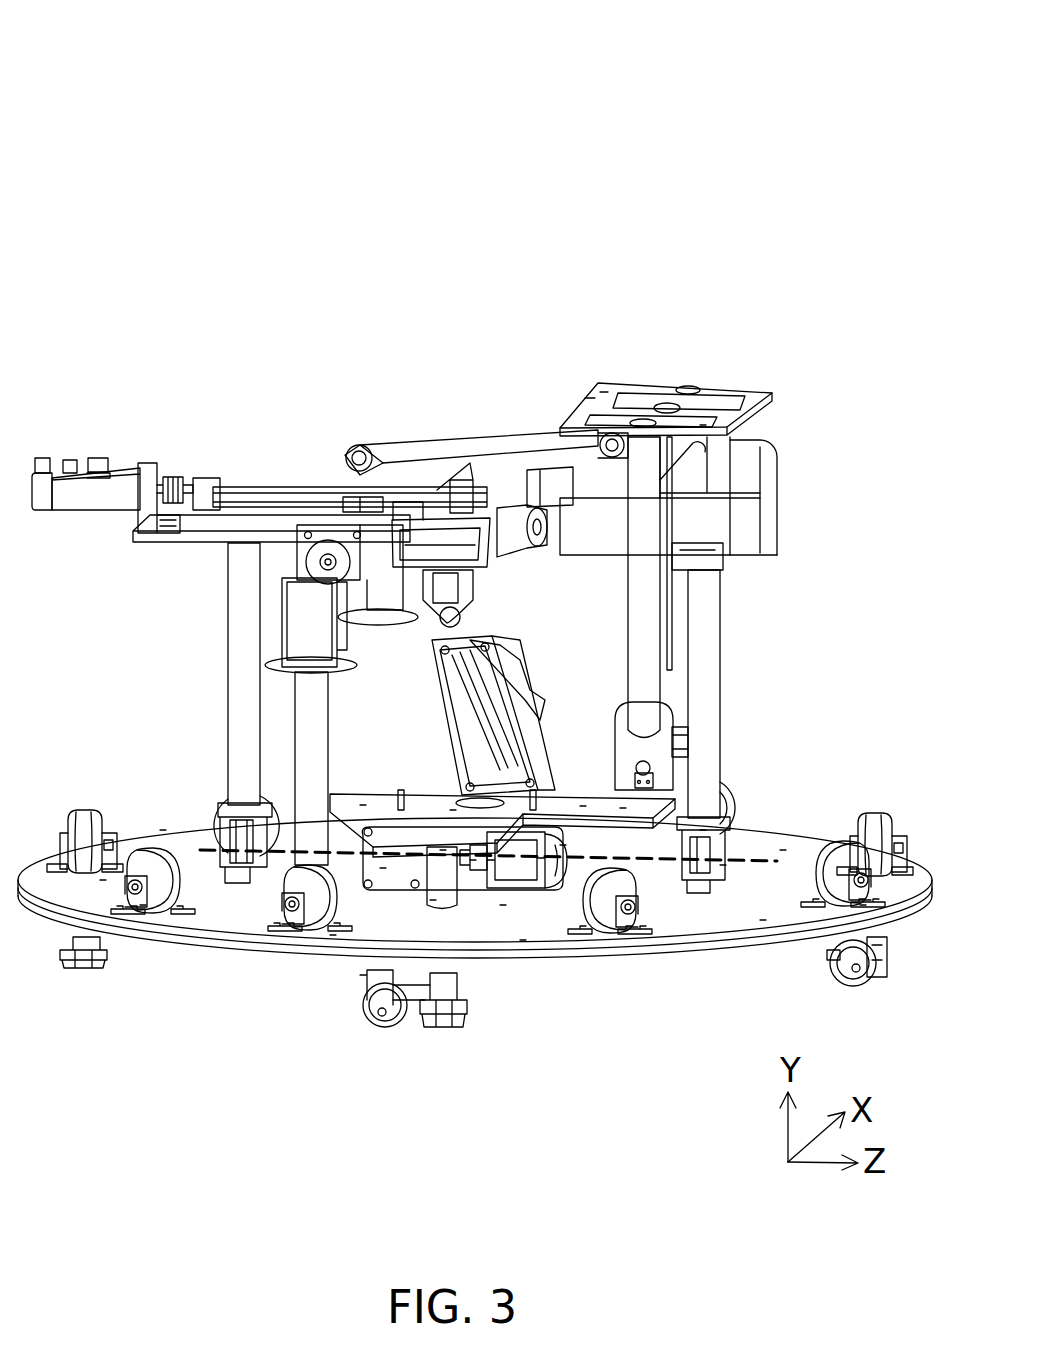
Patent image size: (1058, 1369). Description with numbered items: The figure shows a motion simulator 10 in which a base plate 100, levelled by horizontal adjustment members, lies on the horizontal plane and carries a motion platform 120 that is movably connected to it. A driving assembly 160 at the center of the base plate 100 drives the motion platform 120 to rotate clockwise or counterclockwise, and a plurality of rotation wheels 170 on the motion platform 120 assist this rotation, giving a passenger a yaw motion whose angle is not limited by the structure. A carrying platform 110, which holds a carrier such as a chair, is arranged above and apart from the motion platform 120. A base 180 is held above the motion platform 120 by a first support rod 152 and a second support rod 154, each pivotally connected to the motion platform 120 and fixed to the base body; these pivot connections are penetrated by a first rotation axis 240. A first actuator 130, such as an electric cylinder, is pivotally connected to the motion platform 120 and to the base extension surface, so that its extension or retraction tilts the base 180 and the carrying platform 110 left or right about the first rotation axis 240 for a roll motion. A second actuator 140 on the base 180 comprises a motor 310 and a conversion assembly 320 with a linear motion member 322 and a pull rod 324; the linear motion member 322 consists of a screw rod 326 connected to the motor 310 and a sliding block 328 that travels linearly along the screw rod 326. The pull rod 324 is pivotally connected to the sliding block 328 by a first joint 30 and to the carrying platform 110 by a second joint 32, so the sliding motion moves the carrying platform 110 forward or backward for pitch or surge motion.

The motion simulator 10 is at (186, 78).
The base plate 100 is at (148, 943).
The carrying platform 110 is at (727, 412).
The motion platform 120 is at (240, 912).
The first actuator 130 is at (500, 732).
The second actuator 140 is at (455, 193).
The first support rod 152 is at (707, 598).
The second support rod 154 is at (238, 698).
The driving assembly 160 is at (520, 867).
The rotation wheels 170 is at (622, 887).
The base 180 is at (722, 525).
The first rotation axis 240 is at (777, 860).
The first joint 30 is at (318, 566).
The second joint 32 is at (633, 447).
The motor 310 is at (112, 488).
The conversion assembly 320 is at (493, 260).
The linear motion member 322 is at (437, 320).
The pull rod 324 is at (473, 440).
The screw rod 326 is at (297, 487).
The sliding block 328 is at (352, 533).